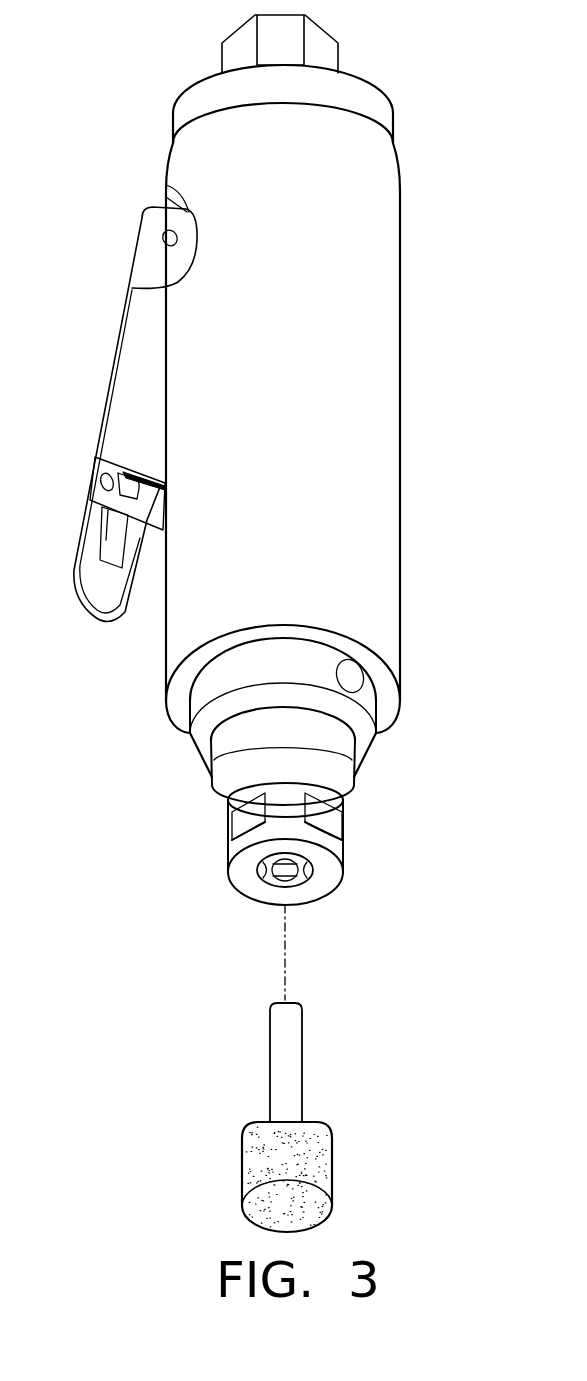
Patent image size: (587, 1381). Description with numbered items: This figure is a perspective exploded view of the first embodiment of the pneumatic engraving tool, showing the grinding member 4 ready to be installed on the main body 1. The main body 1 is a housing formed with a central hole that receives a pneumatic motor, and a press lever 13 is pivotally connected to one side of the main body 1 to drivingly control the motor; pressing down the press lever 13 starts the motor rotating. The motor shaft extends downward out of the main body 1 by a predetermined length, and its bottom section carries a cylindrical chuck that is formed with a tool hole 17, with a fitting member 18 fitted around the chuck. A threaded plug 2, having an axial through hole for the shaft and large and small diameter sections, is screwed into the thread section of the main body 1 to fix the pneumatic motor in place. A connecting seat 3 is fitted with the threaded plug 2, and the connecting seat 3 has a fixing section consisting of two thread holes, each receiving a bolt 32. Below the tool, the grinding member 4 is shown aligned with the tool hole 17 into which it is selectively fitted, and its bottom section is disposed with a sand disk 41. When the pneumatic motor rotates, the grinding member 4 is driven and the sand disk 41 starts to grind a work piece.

The main body 1 is at (372, 500).
The press lever 13 is at (127, 415).
The bolt 32 is at (350, 676).
The connecting seat 3 is at (197, 700).
The threaded plug 2 is at (227, 740).
The fitting member 18 is at (308, 832).
The tool hole 17 is at (287, 872).
The grinding member 4 is at (288, 1062).
The sand disk 41 is at (303, 1163).